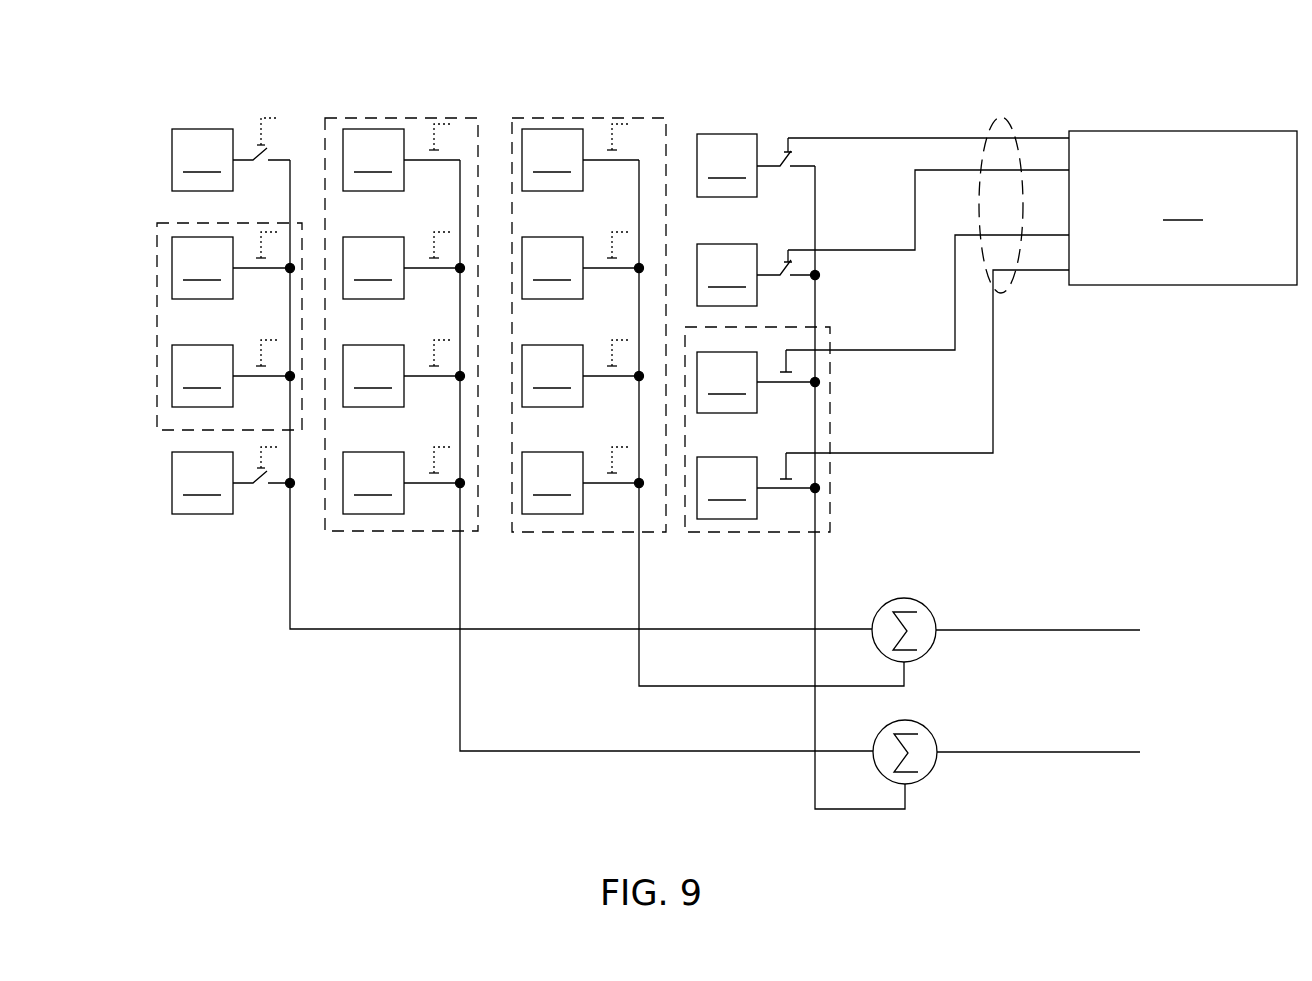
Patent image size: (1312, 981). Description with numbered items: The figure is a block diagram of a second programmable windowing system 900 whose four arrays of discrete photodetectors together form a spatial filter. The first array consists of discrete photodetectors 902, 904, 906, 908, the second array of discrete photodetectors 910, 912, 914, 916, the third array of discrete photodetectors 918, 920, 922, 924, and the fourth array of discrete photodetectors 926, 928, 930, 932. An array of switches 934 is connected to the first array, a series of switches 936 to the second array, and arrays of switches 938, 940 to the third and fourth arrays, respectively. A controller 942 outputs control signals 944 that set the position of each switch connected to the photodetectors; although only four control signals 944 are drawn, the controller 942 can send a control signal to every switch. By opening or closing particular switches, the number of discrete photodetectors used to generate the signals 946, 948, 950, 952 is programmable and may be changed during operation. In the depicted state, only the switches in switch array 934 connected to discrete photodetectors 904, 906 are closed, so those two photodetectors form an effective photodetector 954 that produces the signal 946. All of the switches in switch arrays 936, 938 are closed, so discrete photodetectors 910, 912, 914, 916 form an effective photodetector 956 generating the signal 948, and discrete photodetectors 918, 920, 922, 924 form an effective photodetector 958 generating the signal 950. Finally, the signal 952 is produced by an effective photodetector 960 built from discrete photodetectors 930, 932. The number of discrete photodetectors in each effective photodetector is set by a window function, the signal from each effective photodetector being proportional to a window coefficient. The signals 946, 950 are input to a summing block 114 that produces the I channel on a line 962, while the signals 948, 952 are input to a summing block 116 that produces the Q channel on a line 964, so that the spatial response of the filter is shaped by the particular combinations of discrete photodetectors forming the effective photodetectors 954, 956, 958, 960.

The programmable windowing system 900 is at (284, 728).
The discrete photodetector 902 is at (231, 154).
The discrete photodetector 904 is at (233, 265).
The discrete photodetector 906 is at (233, 373).
The discrete photodetector 908 is at (233, 480).
The discrete photodetector 910 is at (401, 157).
The discrete photodetector 912 is at (404, 265).
The discrete photodetector 914 is at (404, 373).
The discrete photodetector 916 is at (404, 480).
The discrete photodetector 918 is at (580, 157).
The discrete photodetector 920 is at (583, 265).
The discrete photodetector 922 is at (583, 373).
The discrete photodetector 924 is at (583, 480).
The discrete photodetector 926 is at (756, 165).
The discrete photodetector 928 is at (758, 275).
The discrete photodetector 930 is at (758, 381).
The discrete photodetector 932 is at (758, 486).
The array of switches 934 is at (276, 100).
The series of switches 936 is at (442, 100).
The array of switches 938 is at (625, 108).
The array of switches 940 is at (794, 120).
The controller 942 is at (1183, 208).
The control signals 944 is at (995, 107).
The signal 946 is at (287, 607).
The signal 948 is at (457, 689).
The signal 950 is at (636, 671).
The signal 952 is at (814, 794).
The effective photodetector 954 is at (153, 399).
The effective photodetector 956 is at (376, 119).
The effective photodetector 958 is at (531, 119).
The effective photodetector 960 is at (703, 535).
The summing block 114 is at (893, 601).
The summing block 116 is at (923, 783).
The line 962 is at (1065, 630).
The line 964 is at (1062, 755).